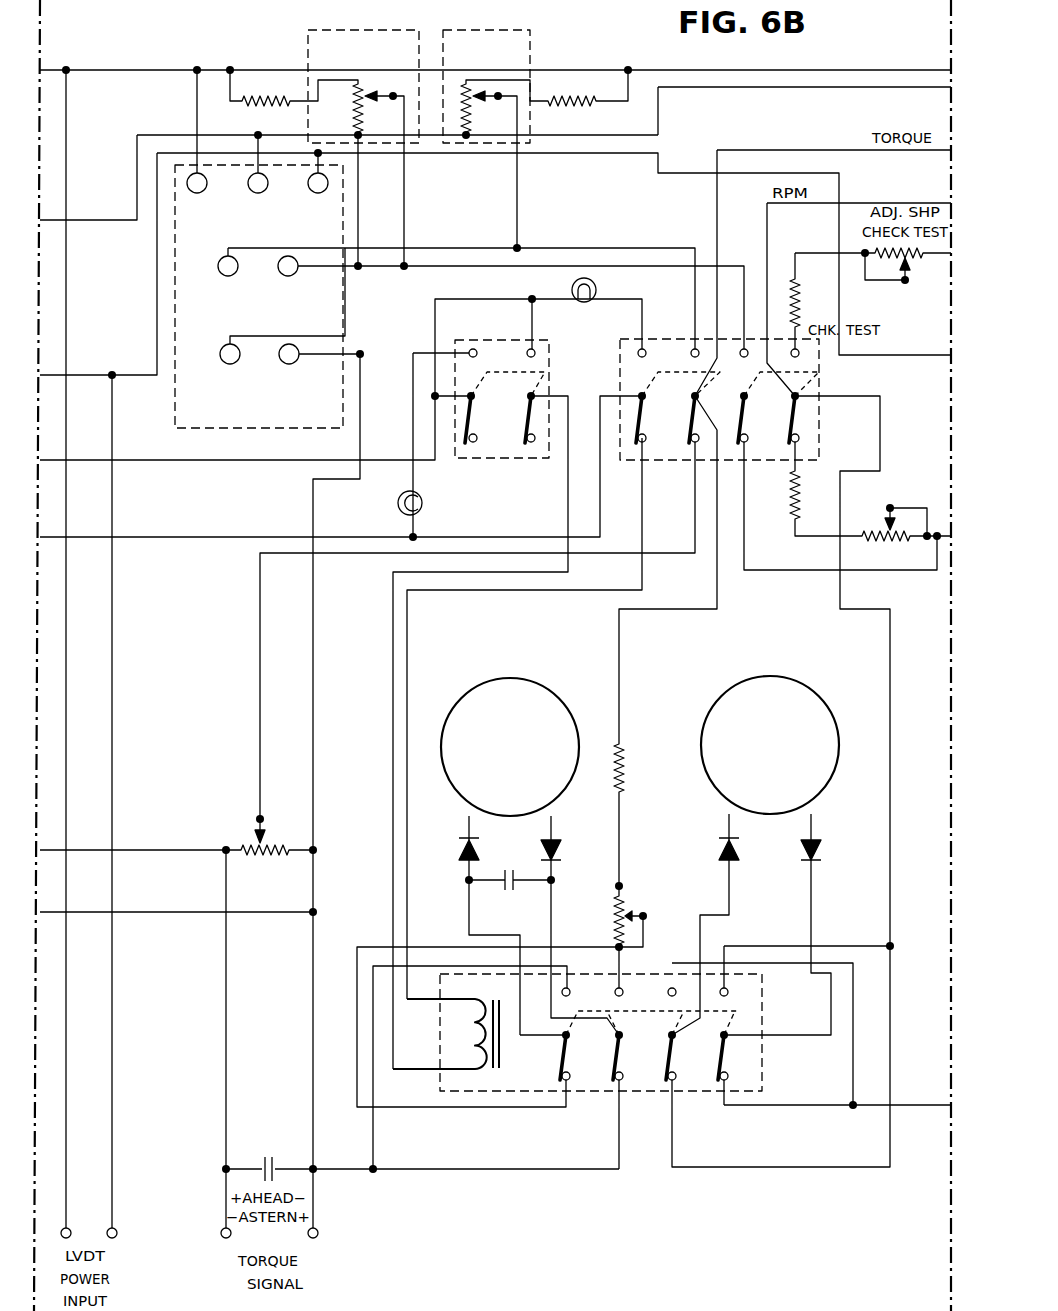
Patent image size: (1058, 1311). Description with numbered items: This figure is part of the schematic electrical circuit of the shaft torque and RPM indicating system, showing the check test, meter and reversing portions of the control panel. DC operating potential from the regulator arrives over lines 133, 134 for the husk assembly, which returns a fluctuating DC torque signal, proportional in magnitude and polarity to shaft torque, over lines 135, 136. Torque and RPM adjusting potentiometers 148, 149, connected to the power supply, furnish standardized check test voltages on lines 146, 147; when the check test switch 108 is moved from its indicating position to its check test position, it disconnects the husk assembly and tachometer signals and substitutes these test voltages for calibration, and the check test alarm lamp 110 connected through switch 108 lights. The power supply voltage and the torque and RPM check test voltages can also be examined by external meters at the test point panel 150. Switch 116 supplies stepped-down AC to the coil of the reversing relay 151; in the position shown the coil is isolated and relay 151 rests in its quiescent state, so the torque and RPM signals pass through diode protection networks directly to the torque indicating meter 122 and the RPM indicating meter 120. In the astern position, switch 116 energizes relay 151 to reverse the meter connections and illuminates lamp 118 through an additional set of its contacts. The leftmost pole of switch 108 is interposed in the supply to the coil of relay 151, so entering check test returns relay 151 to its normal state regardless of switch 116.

The check test switch 108 is at (820, 365).
The check test alarm lamp 110 is at (596, 283).
The switch 116 is at (454, 346).
The lamp 118 is at (398, 504).
The RPM indicating meter 120 is at (733, 691).
The torque indicating meter 122 is at (467, 691).
The line 133 is at (66, 655).
The line 134 is at (112, 655).
The line 135 is at (227, 1057).
The line 136 is at (311, 1109).
The line 146 is at (634, 248).
The line 147 is at (470, 268).
The torque adjusting potentiometer 148 is at (536, 50).
The RPM adjusting potentiometer 149 is at (304, 47).
The test point panel 150 is at (175, 292).
The reversing relay 151 is at (440, 1086).